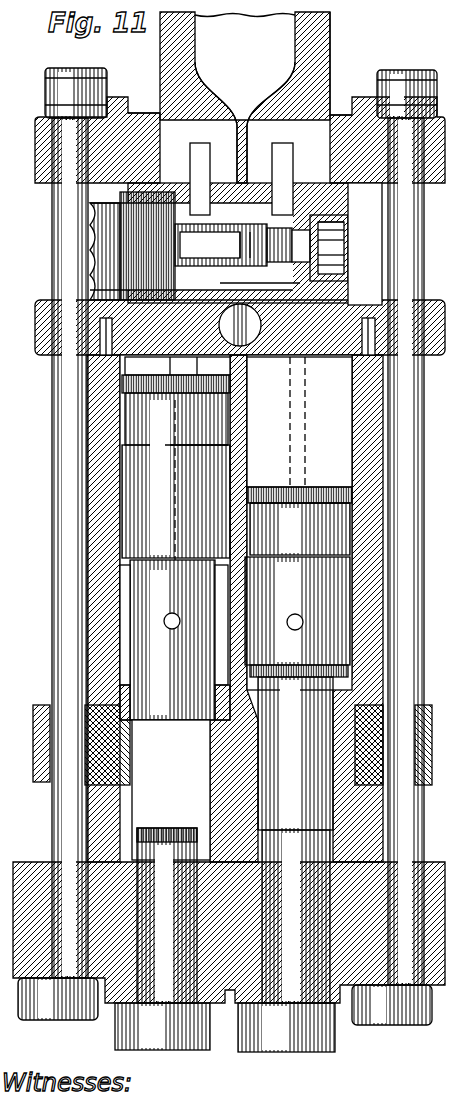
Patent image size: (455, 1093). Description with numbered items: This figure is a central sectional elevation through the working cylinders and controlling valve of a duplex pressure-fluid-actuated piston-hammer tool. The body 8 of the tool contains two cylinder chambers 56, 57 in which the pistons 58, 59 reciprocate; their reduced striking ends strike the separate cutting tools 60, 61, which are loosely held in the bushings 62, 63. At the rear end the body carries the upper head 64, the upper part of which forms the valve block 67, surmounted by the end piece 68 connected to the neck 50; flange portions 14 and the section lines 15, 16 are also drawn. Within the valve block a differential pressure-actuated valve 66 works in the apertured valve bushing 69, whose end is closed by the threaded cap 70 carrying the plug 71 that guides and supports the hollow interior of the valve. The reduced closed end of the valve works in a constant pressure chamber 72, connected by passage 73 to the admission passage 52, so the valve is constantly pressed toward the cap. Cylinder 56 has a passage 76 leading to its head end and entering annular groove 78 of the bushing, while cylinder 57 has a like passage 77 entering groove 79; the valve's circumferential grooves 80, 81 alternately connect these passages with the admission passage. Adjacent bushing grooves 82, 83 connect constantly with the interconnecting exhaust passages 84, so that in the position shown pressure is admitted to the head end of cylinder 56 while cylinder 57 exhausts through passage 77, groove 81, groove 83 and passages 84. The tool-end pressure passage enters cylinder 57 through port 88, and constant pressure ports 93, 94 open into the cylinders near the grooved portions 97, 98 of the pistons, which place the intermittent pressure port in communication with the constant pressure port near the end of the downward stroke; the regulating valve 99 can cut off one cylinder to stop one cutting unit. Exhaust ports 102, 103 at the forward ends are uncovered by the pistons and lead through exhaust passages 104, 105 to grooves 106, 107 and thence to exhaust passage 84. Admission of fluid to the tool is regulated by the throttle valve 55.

The neck 50 is at (327, 30).
The flange plate 14 is at (70, 243).
The groove 106 is at (172, 180).
The groove 107 is at (340, 115).
The end piece 68 is at (335, 115).
The exhaust passages 84 is at (197, 143).
The admission passage 52 is at (242, 125).
The passage 16 is at (224, 93).
The upper head 64 is at (45, 305).
The body 8 is at (95, 572).
The throttle valve 55 is at (28, 860).
The threaded cap 70 is at (110, 215).
The circumferential groove 80 is at (221, 245).
The plug 71 is at (236, 245).
The circumferential groove 81 is at (288, 245).
The constant pressure chamber 72 is at (340, 226).
The passage 73 is at (338, 236).
The differential pressure-actuated valve 66 is at (336, 248).
The valve block 67 is at (332, 262).
The valve bushing 69 is at (322, 275).
The bushing groove 83 is at (230, 285).
The annular groove 78 is at (193, 179).
The annular groove 79 is at (276, 179).
The piston 58 is at (127, 317).
The bushing groove 82 is at (177, 366).
The passage 76 is at (176, 366).
The grooved portion 97 is at (130, 418).
The exhaust passages 104 is at (165, 462).
The cylinder chamber 56 is at (125, 644).
The exhaust ports 102 is at (165, 621).
The axis line 15 is at (245, 526).
The port 88 is at (210, 728).
The regulating valve 99 is at (253, 360).
The passage 77 is at (312, 358).
The exhaust passages 105 is at (300, 407).
The grooved portion 98 is at (345, 501).
The port 94 is at (246, 480).
The port 93 is at (256, 540).
The piston 59 is at (345, 582).
The exhaust ports 103 is at (300, 622).
The cylinder chamber 57 is at (345, 678).
The cutting tool 60 is at (165, 1045).
The cutting tool 61 is at (275, 1045).
The bushing 62 is at (105, 1010).
The bushing 63 is at (340, 1005).